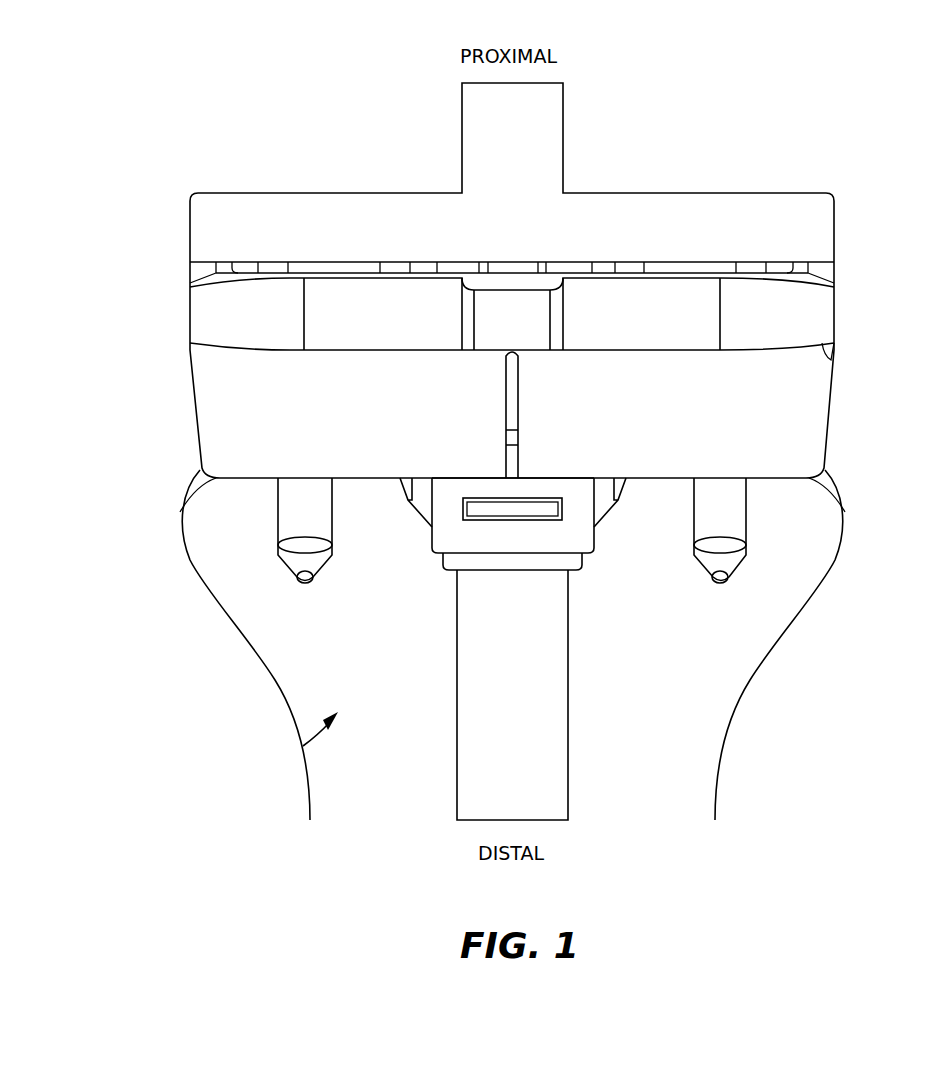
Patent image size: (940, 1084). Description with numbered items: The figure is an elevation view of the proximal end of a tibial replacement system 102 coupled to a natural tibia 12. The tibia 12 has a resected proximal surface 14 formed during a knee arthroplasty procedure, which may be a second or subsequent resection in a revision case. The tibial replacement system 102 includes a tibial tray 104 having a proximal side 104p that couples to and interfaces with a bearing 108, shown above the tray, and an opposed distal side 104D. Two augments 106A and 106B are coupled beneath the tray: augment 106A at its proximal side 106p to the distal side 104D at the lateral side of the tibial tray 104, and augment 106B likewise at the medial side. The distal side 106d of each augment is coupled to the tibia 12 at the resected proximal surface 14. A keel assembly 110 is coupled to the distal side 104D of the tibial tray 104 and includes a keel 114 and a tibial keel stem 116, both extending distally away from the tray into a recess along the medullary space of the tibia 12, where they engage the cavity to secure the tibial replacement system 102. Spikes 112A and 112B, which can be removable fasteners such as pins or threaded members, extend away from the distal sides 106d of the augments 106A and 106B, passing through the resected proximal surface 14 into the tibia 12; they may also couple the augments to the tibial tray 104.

The tibial replacement system 102 is at (192, 140).
The bearing 108 is at (732, 202).
The proximal side of tibial tray 104p is at (823, 278).
The tibial tray 104 is at (827, 317).
The distal side of tibial tray 104D is at (824, 344).
The proximal side of augments 106p is at (210, 340).
The augment 106A is at (210, 413).
The augment 106B is at (814, 413).
The distal side of augments 106d is at (182, 510).
The resected proximal surface 14 is at (804, 473).
The tibia 12 is at (268, 638).
The keel assembly 110 is at (307, 744).
The spike 112A is at (312, 520).
The spike 112B is at (728, 520).
The keel 114 is at (585, 535).
The tibial keel stem 116 is at (550, 700).